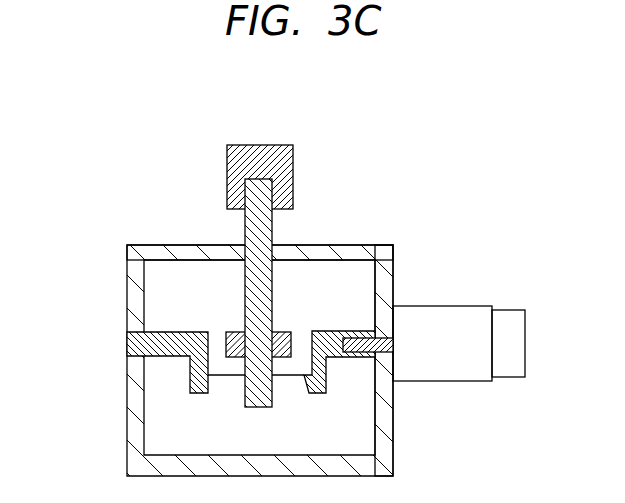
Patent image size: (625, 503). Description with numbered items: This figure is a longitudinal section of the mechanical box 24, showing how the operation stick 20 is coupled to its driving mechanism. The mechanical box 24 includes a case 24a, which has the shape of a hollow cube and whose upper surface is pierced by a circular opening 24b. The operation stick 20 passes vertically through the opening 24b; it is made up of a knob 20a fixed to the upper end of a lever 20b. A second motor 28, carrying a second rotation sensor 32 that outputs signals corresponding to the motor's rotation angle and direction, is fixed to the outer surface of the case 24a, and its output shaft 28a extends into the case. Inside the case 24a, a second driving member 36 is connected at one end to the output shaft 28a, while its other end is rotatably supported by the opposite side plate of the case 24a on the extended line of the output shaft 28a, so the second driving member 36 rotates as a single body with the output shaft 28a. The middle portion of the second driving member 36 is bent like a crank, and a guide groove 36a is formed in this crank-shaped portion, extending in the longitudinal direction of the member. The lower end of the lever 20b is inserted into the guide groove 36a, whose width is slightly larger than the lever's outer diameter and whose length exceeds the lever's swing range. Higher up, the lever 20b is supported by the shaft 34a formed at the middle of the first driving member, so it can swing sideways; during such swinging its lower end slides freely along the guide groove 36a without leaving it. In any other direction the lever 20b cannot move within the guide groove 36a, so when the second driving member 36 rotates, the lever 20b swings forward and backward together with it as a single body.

The operation stick 20 is at (253, 239).
The knob 20a is at (235, 162).
The lever 20b is at (264, 240).
The mechanical box 24 is at (110, 198).
The case 24a is at (385, 265).
The opening 24b is at (200, 252).
The second motor 28 is at (458, 318).
The output shaft 28a is at (350, 335).
The second rotation sensor 32 is at (510, 318).
The shaft 34a is at (232, 333).
The second driving member 36 is at (185, 383).
The guide groove 36a is at (221, 388).